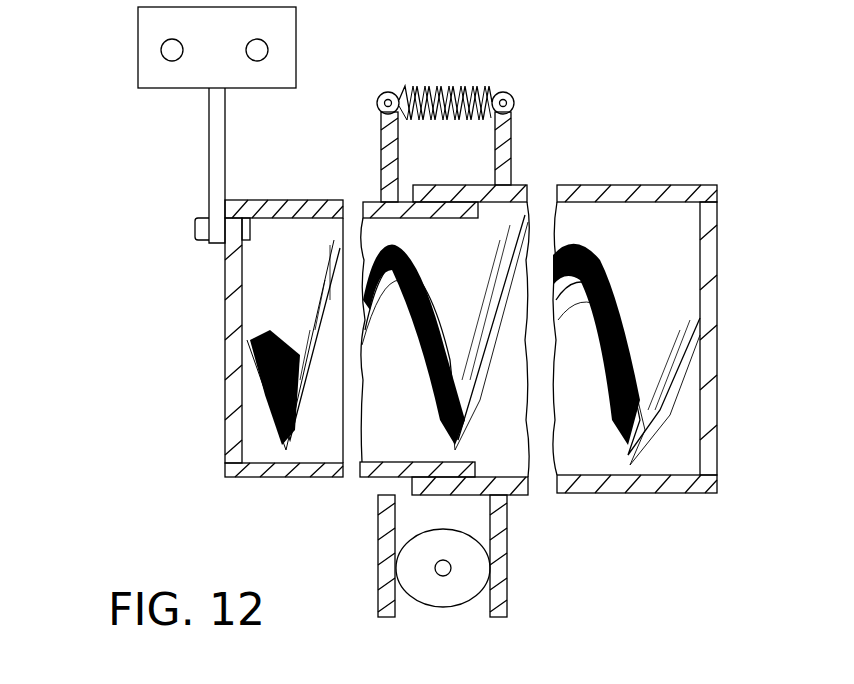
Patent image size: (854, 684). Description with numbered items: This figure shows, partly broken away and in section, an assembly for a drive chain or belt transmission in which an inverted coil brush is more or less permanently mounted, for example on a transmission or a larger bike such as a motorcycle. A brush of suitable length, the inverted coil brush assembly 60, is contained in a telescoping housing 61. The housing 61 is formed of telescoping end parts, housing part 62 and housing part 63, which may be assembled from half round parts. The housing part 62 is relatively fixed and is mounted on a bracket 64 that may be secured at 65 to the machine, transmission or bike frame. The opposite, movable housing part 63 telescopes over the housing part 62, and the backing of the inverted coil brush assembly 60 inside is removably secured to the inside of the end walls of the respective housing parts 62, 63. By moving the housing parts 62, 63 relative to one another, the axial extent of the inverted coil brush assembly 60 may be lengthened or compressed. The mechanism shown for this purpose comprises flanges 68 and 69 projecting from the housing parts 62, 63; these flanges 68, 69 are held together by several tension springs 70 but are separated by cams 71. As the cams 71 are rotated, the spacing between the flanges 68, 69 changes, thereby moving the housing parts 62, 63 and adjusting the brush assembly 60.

The inverted coil brush assembly 60 is at (610, 286).
The telescoping housing 61 is at (688, 170).
The housing part 62 is at (225, 470).
The movable housing part 63 is at (720, 463).
The bracket 64 is at (208, 135).
The securing point 65 is at (160, 50).
The flange 68 is at (381, 148).
The flange 69 is at (511, 148).
The tension springs 70 is at (470, 95).
The cams 71 is at (458, 598).